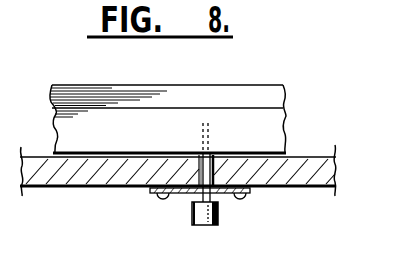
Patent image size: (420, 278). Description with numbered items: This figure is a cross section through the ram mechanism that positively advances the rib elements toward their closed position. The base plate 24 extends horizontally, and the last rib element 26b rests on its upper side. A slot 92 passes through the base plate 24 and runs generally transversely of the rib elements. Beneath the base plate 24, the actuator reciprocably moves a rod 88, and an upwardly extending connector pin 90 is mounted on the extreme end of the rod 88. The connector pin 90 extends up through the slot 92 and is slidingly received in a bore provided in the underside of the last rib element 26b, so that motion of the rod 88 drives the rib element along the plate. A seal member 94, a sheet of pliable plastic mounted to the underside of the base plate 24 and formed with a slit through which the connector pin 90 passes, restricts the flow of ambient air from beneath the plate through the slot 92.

The last rib element 26b is at (294, 97).
The base plate 24 is at (92, 193).
The connector pin 90 is at (221, 163).
The slot 92 is at (194, 176).
The seal member 94 is at (182, 194).
The rod 88 is at (213, 226).